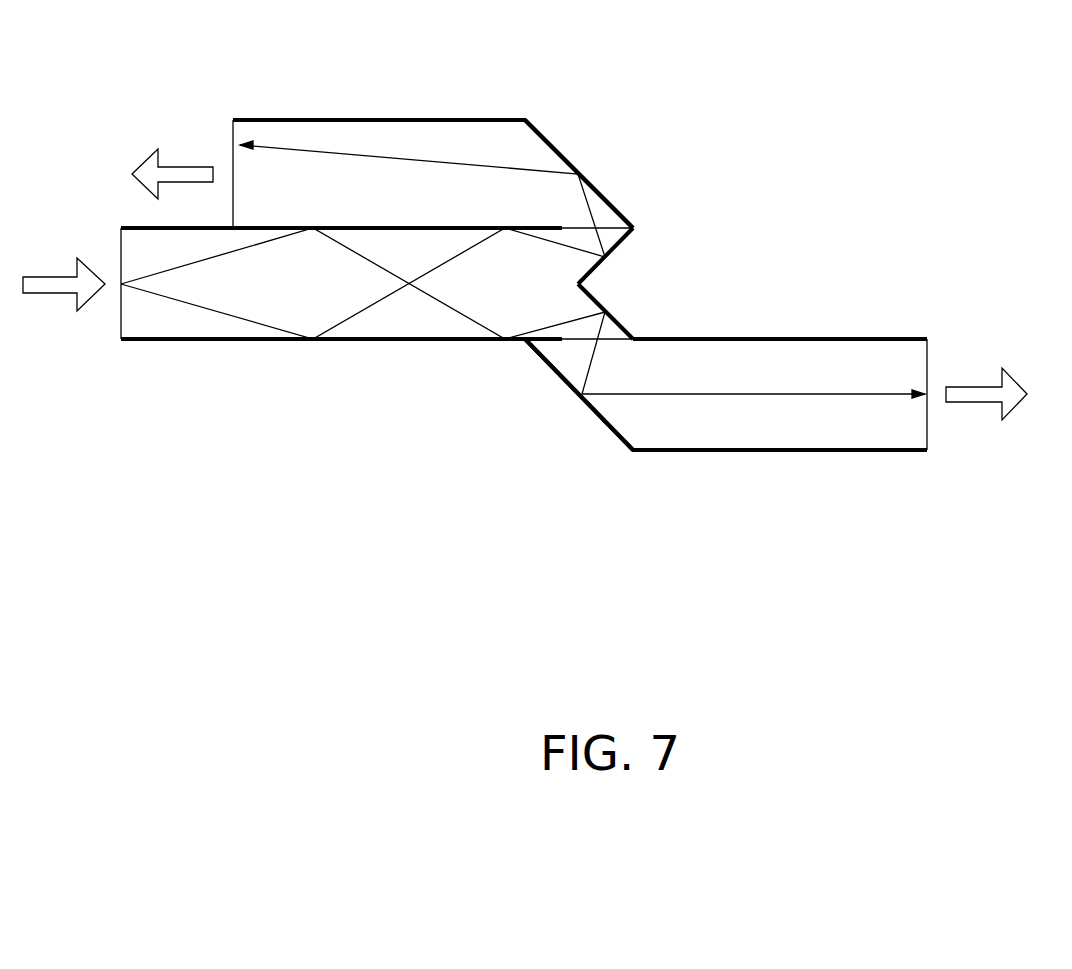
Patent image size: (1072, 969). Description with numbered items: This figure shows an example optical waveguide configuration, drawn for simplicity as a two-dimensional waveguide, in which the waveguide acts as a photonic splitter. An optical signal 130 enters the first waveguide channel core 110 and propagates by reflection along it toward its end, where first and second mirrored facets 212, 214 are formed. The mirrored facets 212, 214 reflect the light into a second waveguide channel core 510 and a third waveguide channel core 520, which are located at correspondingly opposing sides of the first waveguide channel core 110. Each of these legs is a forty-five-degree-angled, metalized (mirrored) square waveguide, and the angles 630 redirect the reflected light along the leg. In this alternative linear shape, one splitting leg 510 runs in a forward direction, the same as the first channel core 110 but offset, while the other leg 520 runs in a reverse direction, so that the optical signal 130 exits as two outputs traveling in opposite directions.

The first waveguide channel core 110 is at (222, 348).
The second waveguide channel core 510 is at (355, 113).
The third waveguide channel core 520 is at (763, 458).
The angles 630 is at (568, 156).
The first mirrored facet 212 is at (610, 257).
The second mirrored facet 214 is at (673, 311).
The optical signal 130 is at (531, 284).